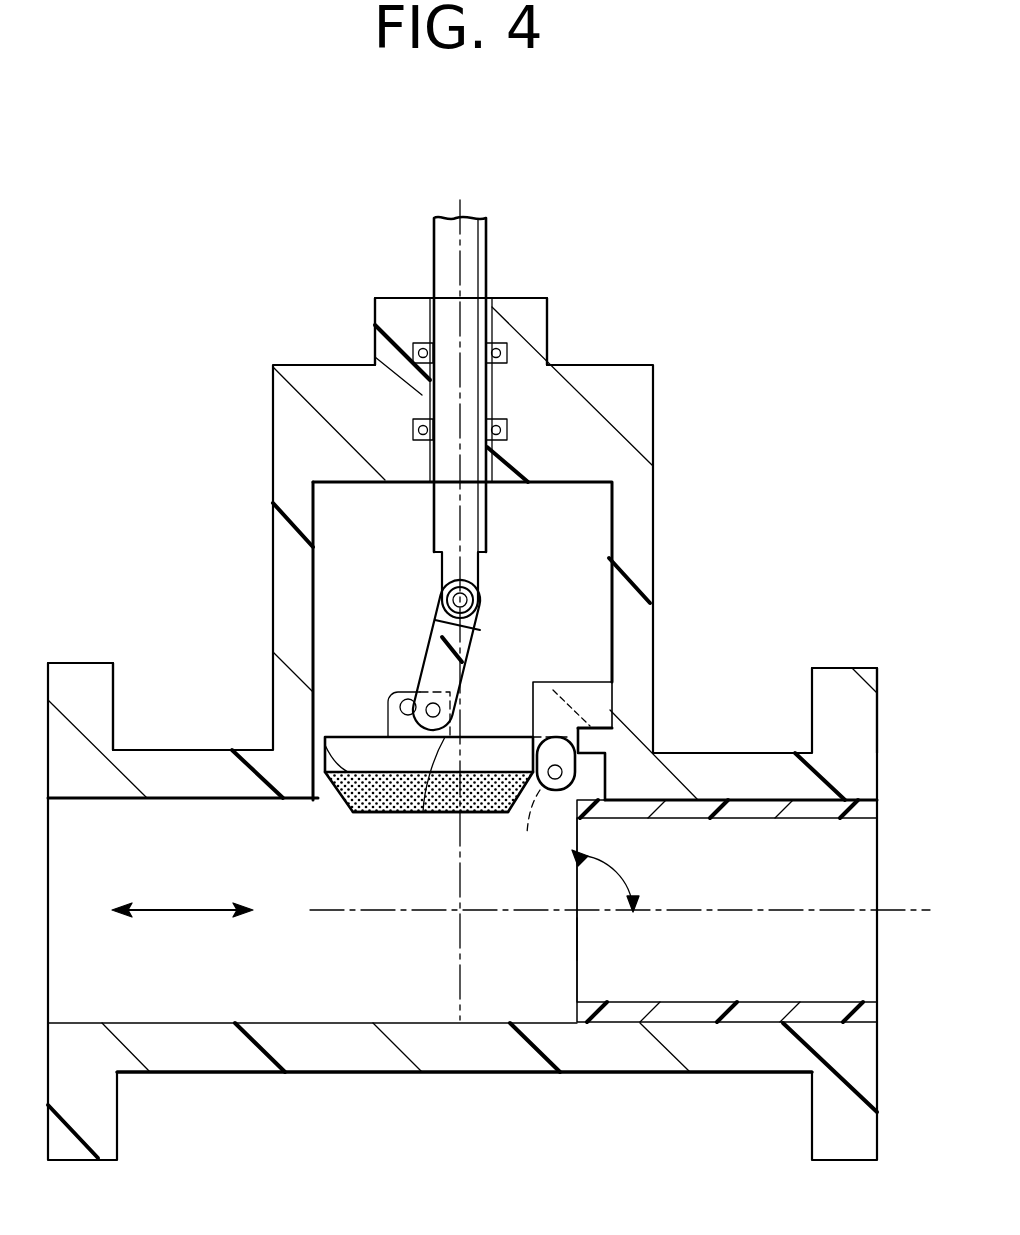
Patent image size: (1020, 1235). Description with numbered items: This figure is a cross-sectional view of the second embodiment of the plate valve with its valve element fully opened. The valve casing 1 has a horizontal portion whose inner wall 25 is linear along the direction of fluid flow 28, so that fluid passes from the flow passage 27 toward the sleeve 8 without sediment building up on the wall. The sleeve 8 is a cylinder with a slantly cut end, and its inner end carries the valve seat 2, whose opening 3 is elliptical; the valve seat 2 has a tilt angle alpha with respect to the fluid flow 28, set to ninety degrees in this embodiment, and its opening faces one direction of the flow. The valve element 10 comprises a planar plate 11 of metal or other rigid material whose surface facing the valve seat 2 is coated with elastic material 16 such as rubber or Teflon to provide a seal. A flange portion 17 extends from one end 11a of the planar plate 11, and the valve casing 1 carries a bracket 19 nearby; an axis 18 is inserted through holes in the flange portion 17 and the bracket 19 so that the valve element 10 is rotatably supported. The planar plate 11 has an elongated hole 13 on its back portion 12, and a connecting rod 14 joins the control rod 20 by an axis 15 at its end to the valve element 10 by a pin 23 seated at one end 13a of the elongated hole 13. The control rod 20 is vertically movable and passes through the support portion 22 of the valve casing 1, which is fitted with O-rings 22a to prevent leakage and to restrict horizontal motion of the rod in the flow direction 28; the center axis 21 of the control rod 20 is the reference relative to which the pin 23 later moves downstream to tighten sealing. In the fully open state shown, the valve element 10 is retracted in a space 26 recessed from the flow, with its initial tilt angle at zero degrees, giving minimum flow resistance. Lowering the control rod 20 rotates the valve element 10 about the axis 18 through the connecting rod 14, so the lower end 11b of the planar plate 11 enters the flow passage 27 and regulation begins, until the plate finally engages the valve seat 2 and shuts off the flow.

The valve casing 1 is at (292, 595).
The valve seat 2 is at (573, 922).
The opening 3 is at (575, 957).
The sleeve 8 is at (743, 822).
The valve element 10 is at (380, 820).
The planar plate 11 is at (343, 742).
The one end of valve element plate 11a is at (513, 760).
The lower end of planar plate 11b is at (307, 800).
The back portion 12 is at (365, 737).
The elongated hole 13 is at (408, 703).
The one end of elongated hole 13a is at (423, 814).
The connecting rod 14 is at (473, 640).
The axis 15 is at (473, 587).
The elastic material 16 is at (357, 815).
The flange portion 17 is at (544, 797).
The axis 18 is at (590, 817).
The bracket 19 is at (580, 703).
The control rod 20 is at (477, 247).
The center axis 21 is at (460, 970).
The support portion 22 is at (422, 393).
The O-rings 22a is at (507, 428).
The pin 23 is at (447, 703).
The inner wall 25 is at (477, 1022).
The space 26 is at (585, 532).
The flow passage 27 is at (182, 840).
The direction of fluid flow 28 is at (187, 912).
The tilt angle alpha is at (611, 881).